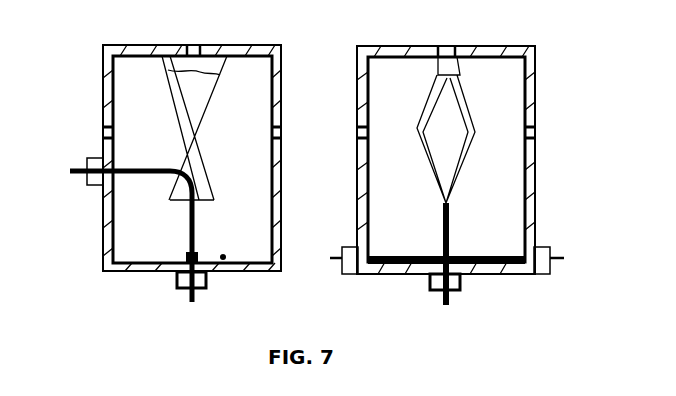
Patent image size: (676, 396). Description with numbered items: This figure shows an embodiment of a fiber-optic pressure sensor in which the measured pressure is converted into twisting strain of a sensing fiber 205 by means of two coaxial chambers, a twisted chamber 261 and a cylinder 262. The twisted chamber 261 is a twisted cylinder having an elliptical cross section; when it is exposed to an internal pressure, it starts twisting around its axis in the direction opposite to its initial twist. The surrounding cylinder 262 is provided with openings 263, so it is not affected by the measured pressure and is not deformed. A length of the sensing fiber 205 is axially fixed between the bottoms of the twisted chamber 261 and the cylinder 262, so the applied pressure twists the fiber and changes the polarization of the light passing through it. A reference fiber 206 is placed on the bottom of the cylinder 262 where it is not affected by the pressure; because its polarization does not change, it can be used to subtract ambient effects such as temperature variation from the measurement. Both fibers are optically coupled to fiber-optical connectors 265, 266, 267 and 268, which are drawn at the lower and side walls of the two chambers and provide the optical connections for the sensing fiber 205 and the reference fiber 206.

The sensing fiber 205 is at (183, 232).
The reference fiber 206 is at (420, 272).
The twisted chamber 261 is at (214, 200).
The cylinder 262 is at (103, 257).
The openings 263 is at (103, 130).
The fiber-optical connector 265 is at (200, 288).
The fiber-optical connector 266 is at (87, 185).
The fiber-optical connector 267 is at (343, 275).
The fiber-optical connector 268 is at (548, 275).